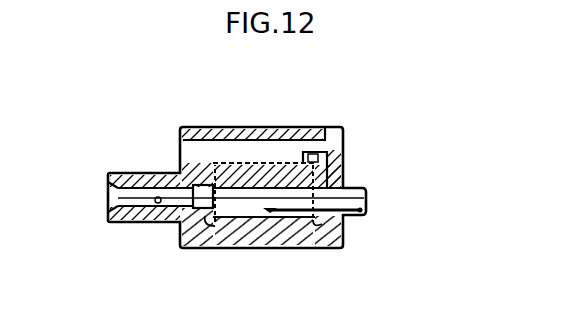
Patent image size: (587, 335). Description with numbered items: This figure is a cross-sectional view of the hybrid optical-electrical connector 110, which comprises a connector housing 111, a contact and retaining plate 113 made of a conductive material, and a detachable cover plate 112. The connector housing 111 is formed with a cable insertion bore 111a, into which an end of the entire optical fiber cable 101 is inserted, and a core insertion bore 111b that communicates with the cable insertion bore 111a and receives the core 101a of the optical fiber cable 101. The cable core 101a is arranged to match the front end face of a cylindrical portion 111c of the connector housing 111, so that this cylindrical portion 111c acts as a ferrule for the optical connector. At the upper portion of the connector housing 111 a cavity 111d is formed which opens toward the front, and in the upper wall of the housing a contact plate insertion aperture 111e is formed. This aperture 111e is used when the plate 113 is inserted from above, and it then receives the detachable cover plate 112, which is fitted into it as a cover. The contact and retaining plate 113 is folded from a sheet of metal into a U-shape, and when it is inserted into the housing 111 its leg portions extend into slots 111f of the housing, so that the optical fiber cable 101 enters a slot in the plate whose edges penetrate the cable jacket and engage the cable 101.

The connector 110 is at (362, 108).
The connector housing 111 is at (343, 170).
The cable insertion bore 111a is at (270, 213).
The core insertion bore 111b is at (157, 224).
The cylindrical portion 111c is at (114, 223).
The cavity 111d is at (262, 160).
The contact plate insertion aperture 111e is at (225, 127).
The slots 111f is at (197, 248).
The detachable cover plate 112 is at (302, 128).
The contact and retaining plate 113 is at (343, 148).
The optical fiber cable 101 is at (347, 220).
The core 101a is at (137, 172).